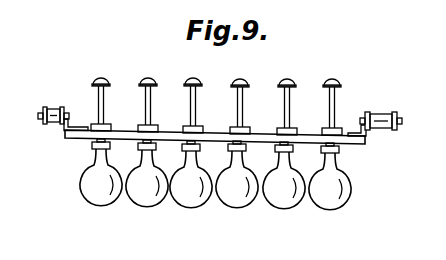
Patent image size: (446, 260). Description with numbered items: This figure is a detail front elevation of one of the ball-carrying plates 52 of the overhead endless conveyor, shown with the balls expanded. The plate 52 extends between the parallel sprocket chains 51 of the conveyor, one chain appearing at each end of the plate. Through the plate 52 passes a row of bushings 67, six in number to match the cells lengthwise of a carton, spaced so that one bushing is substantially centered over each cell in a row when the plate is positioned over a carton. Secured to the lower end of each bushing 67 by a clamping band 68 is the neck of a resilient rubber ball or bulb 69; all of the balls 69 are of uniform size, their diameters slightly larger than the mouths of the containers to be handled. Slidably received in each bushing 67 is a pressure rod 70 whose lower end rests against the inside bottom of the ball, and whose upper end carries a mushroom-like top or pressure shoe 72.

The sprocket chains 51 is at (54, 106).
The ball-carrying plate 52 is at (357, 141).
The bushing 67 is at (341, 131).
The clamping band 68 is at (92, 150).
The resilient rubber ball 69 is at (147, 206).
The pressure rod 70 is at (143, 122).
The pressure shoe 72 is at (144, 79).